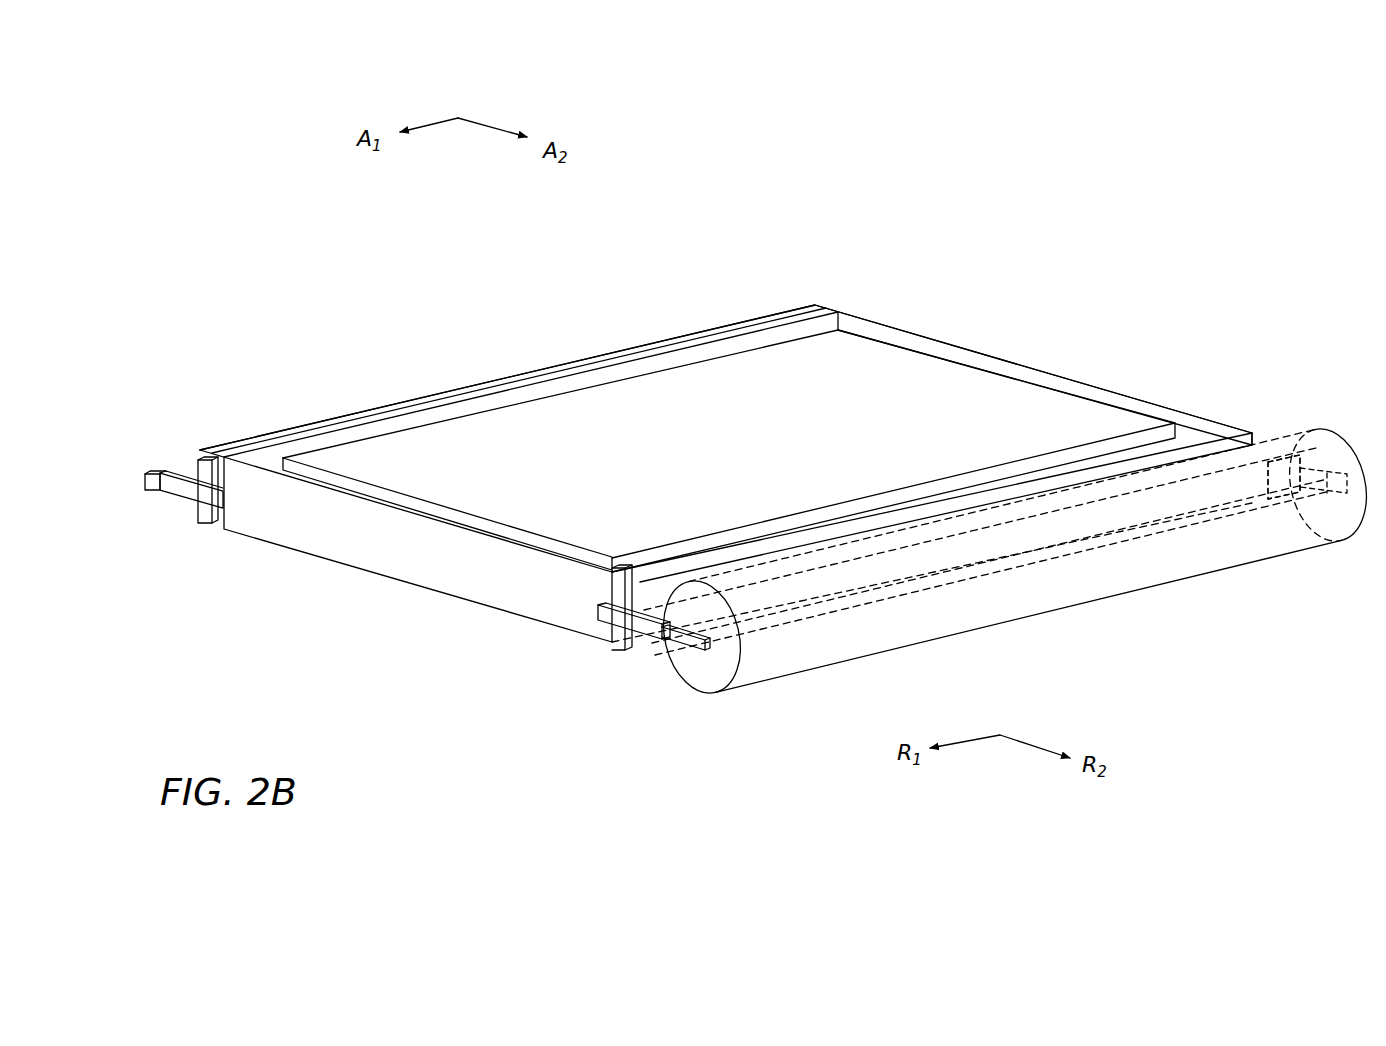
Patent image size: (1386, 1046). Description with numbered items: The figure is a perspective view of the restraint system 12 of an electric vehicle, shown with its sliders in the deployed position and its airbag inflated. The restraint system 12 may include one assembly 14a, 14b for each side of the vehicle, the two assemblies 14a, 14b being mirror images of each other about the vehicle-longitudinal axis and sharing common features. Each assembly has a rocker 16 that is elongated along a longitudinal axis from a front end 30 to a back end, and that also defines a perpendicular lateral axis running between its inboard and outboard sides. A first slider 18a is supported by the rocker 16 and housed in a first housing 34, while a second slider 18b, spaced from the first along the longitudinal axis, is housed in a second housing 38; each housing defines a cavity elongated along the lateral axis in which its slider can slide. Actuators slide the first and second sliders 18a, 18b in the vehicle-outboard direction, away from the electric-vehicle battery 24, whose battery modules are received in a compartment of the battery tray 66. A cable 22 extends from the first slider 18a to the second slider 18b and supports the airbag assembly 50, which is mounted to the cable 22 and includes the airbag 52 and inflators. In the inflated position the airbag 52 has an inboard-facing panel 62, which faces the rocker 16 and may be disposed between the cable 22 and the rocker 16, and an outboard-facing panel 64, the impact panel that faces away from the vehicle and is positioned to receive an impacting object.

The restraint system 12 is at (720, 240).
The assembly 14a is at (1315, 404).
The assembly 14b is at (872, 288).
The rocker 16 is at (607, 656).
The first slider 18a is at (665, 650).
The second slider 18b is at (1320, 462).
The cable 22 is at (972, 572).
The electric-vehicle battery 24 is at (398, 492).
The front end 30 is at (640, 655).
The first housing 34 is at (640, 603).
The second housing 38 is at (1290, 462).
The airbag assembly 50 is at (1182, 628).
The airbag 52 is at (1108, 598).
The inboard-facing panel 62 is at (700, 585).
The outboard-facing panel 64 is at (737, 665).
The battery tray 66 is at (1060, 365).